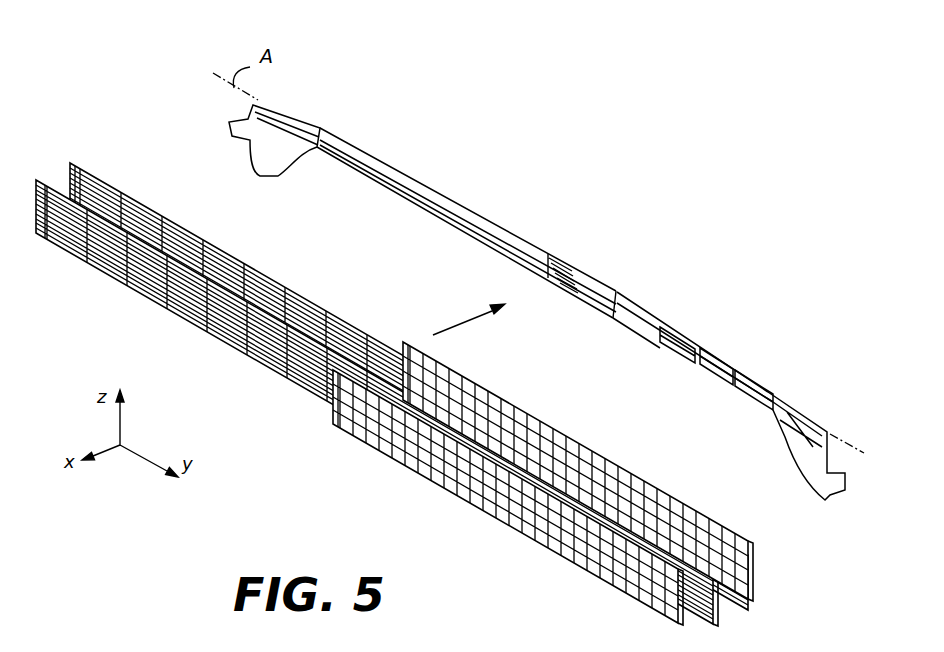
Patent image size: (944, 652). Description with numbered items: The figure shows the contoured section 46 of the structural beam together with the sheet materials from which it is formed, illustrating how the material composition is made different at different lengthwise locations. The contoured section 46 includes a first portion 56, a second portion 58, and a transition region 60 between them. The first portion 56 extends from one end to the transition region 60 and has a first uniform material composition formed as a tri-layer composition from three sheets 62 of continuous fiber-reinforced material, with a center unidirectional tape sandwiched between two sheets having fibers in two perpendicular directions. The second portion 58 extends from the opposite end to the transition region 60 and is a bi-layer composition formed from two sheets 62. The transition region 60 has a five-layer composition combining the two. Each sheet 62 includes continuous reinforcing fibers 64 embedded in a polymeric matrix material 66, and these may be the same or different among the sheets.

The contoured section 46 is at (231, 132).
The second portion 58 is at (558, 244).
The transition region 60 is at (596, 272).
The first portion 56 is at (852, 420).
The sheets 62 is at (68, 180).
The continuous reinforcing fibers 64 is at (483, 494).
The polymeric matrix material 66 is at (430, 456).